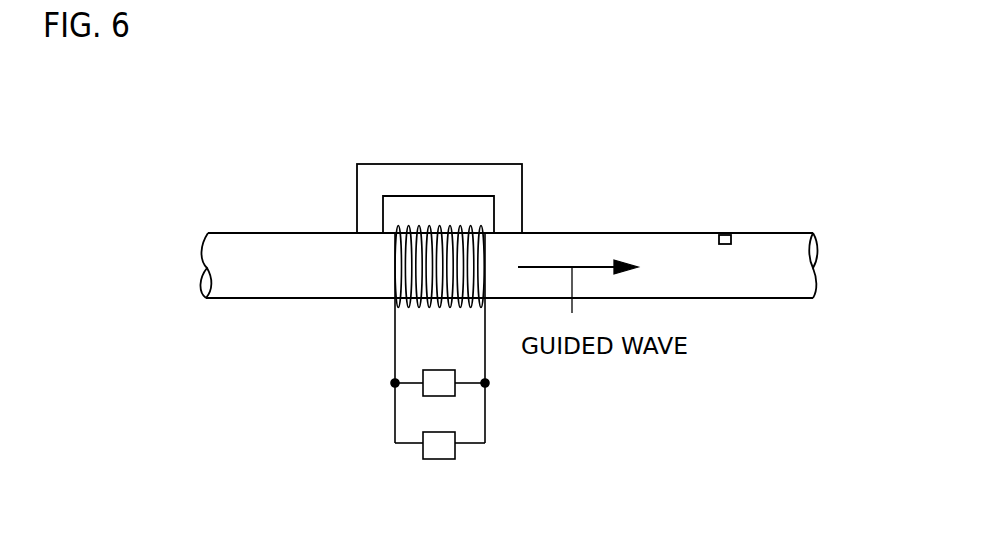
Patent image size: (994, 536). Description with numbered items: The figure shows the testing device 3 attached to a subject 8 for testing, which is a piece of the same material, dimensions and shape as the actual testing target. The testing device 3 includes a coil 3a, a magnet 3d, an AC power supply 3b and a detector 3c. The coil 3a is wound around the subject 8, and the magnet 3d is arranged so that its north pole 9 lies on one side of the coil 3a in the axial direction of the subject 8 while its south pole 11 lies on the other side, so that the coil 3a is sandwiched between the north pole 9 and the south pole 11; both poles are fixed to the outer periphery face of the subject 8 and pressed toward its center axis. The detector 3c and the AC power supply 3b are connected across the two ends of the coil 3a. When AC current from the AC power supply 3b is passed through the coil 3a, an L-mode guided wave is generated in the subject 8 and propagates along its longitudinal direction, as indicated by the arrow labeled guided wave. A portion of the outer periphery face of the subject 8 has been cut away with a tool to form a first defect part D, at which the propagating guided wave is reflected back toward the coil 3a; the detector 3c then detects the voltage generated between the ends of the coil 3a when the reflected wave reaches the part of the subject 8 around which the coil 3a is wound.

The testing device 3 is at (321, 143).
The coil 3a is at (394, 268).
The AC power supply 3b is at (439, 448).
The detector 3c is at (437, 383).
The magnet 3d is at (450, 175).
The subject for testing 8 is at (657, 250).
The north pole 9 is at (358, 215).
The south pole 11 is at (517, 213).
The first defect part D is at (727, 222).